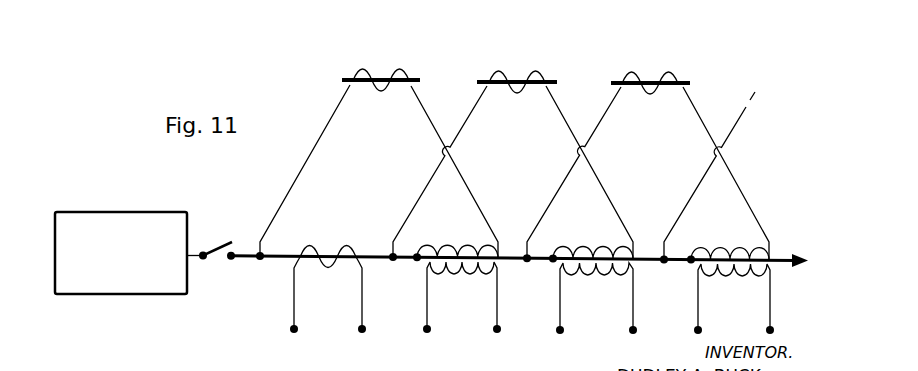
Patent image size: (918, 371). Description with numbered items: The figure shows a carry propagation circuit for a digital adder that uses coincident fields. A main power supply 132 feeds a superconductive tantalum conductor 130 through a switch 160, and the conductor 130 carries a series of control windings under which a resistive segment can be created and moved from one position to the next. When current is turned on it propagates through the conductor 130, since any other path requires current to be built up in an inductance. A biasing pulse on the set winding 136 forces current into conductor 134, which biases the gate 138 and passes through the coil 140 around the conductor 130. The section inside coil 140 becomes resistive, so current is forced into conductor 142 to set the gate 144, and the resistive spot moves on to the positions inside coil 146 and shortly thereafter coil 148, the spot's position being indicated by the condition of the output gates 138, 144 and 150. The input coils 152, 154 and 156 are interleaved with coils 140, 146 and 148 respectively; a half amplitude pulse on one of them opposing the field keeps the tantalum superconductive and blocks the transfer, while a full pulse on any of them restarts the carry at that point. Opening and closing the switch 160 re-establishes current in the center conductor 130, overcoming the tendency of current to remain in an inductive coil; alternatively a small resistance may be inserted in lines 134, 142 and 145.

The tantalum conductor 130 is at (519, 268).
The main power supply 132 is at (121, 243).
The conductor 134 is at (305, 170).
The set winding 136 is at (328, 290).
The gate 138 is at (381, 66).
The coil 140 is at (435, 247).
The conductor 142 is at (453, 171).
The gate 144 is at (517, 68).
The line 145 is at (585, 172).
The coil 146 is at (568, 249).
The coil 148 is at (705, 250).
The gate 150 is at (650, 69).
The input coil 152 is at (462, 297).
The input coil 154 is at (596, 298).
The input coil 156 is at (734, 299).
The switch 160 is at (217, 240).